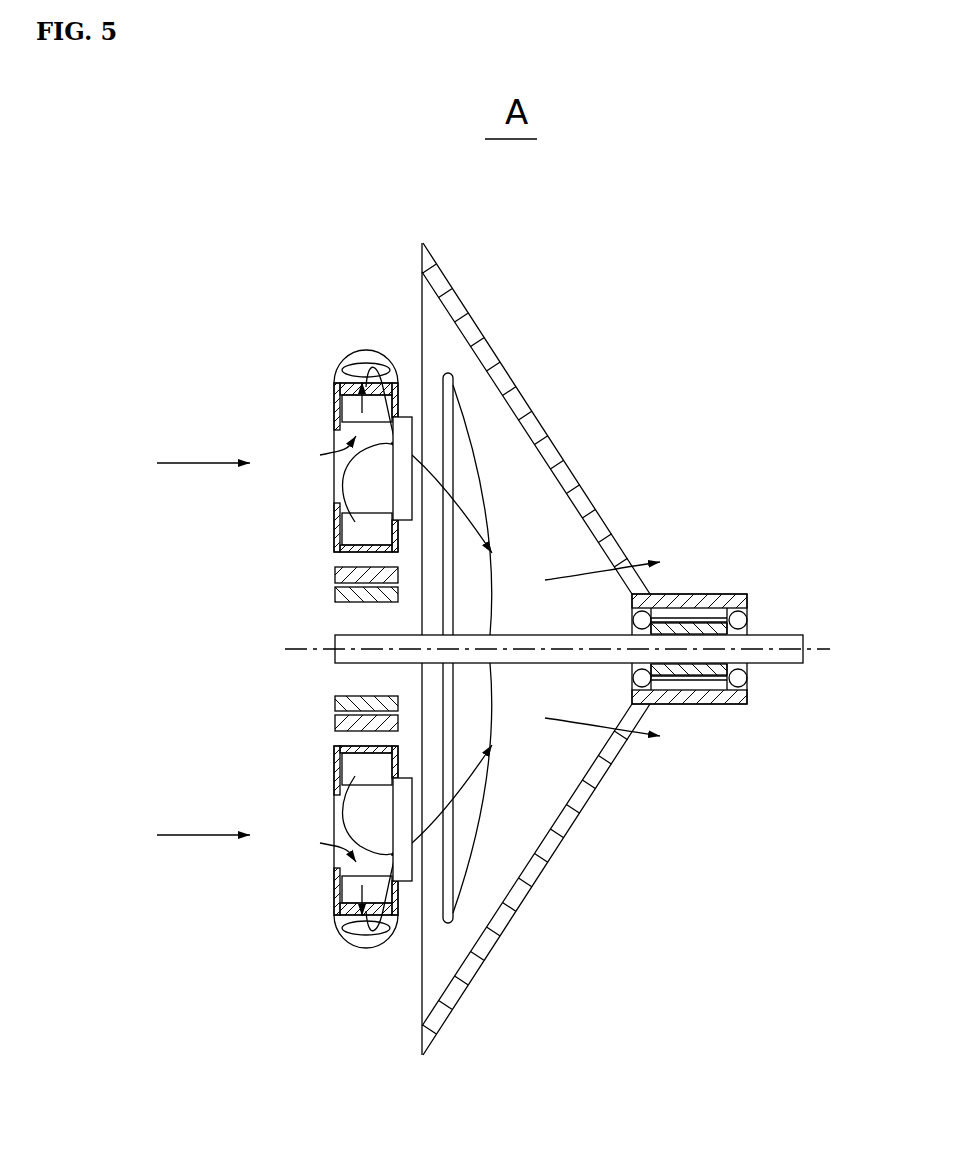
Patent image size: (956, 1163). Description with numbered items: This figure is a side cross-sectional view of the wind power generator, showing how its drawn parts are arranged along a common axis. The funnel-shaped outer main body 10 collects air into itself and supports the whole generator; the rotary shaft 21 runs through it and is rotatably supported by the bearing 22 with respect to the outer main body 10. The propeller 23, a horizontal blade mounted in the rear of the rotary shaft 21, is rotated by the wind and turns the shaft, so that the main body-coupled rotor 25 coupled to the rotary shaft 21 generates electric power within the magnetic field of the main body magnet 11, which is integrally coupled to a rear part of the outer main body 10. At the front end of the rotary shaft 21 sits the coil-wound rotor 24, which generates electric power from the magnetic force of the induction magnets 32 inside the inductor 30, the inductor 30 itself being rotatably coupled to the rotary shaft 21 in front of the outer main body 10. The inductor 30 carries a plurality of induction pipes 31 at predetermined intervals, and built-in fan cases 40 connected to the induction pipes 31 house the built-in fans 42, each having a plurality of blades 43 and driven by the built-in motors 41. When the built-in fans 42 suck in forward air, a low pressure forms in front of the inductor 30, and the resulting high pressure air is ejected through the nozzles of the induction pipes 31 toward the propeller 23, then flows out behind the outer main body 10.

The outer main body 10 is at (538, 422).
The main body magnet 11 is at (694, 602).
The rotary shaft 21 is at (792, 656).
The bearing 22 is at (742, 618).
The propeller 23 is at (505, 865).
The rotor 24 is at (335, 600).
The main body-coupled rotor 25 is at (695, 680).
The inductor 30 is at (208, 694).
The induction pipe 31 is at (357, 366).
The induction magnet 32 is at (335, 575).
The built-in fan case 40 is at (333, 415).
The built-in motor 41 is at (410, 418).
The built-in fan 42 is at (298, 874).
The blade 43 is at (338, 488).